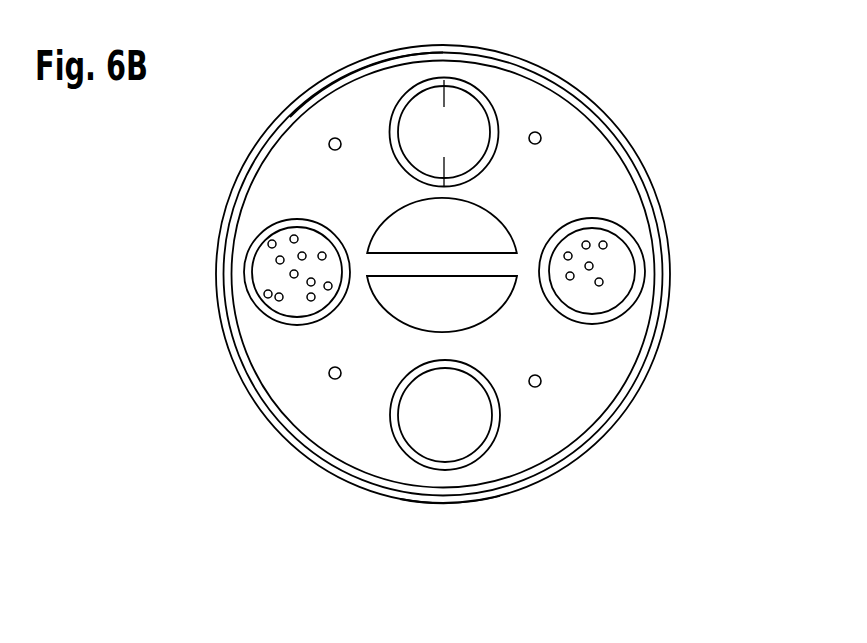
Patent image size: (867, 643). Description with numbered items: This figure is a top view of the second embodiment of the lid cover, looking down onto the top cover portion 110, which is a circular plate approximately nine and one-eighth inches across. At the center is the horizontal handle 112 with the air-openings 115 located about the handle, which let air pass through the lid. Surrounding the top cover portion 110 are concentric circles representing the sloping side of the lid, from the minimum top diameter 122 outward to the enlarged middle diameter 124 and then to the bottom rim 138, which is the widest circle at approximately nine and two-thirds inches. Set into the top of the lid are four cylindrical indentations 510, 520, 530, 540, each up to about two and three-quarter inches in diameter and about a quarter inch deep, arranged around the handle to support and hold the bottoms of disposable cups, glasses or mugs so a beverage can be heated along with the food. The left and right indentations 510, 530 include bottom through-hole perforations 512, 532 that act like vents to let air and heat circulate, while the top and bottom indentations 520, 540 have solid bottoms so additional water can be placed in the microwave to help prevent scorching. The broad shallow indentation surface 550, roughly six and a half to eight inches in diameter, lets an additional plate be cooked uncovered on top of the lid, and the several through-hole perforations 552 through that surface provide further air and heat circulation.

The top cover portion 110 is at (509, 274).
The horizontal handle 112 is at (557, 373).
The air-openings 115 is at (559, 194).
The minimum top diameter 122 is at (459, 278).
The enlarged middle diameter 124 is at (443, 308).
The bottom rim 138 is at (496, 547).
The cylindrical indentation 510 is at (221, 283).
The bottom through-hole perforations 512 is at (292, 238).
The cylindrical indentation 520 is at (400, 464).
The cylindrical indentation 530 is at (661, 299).
The bottom through-hole perforations 532 is at (602, 282).
The cylindrical indentation 540 is at (489, 94).
The larger cylindrical indentation 550 is at (330, 64).
The through-hole perforations 552 is at (416, 281).